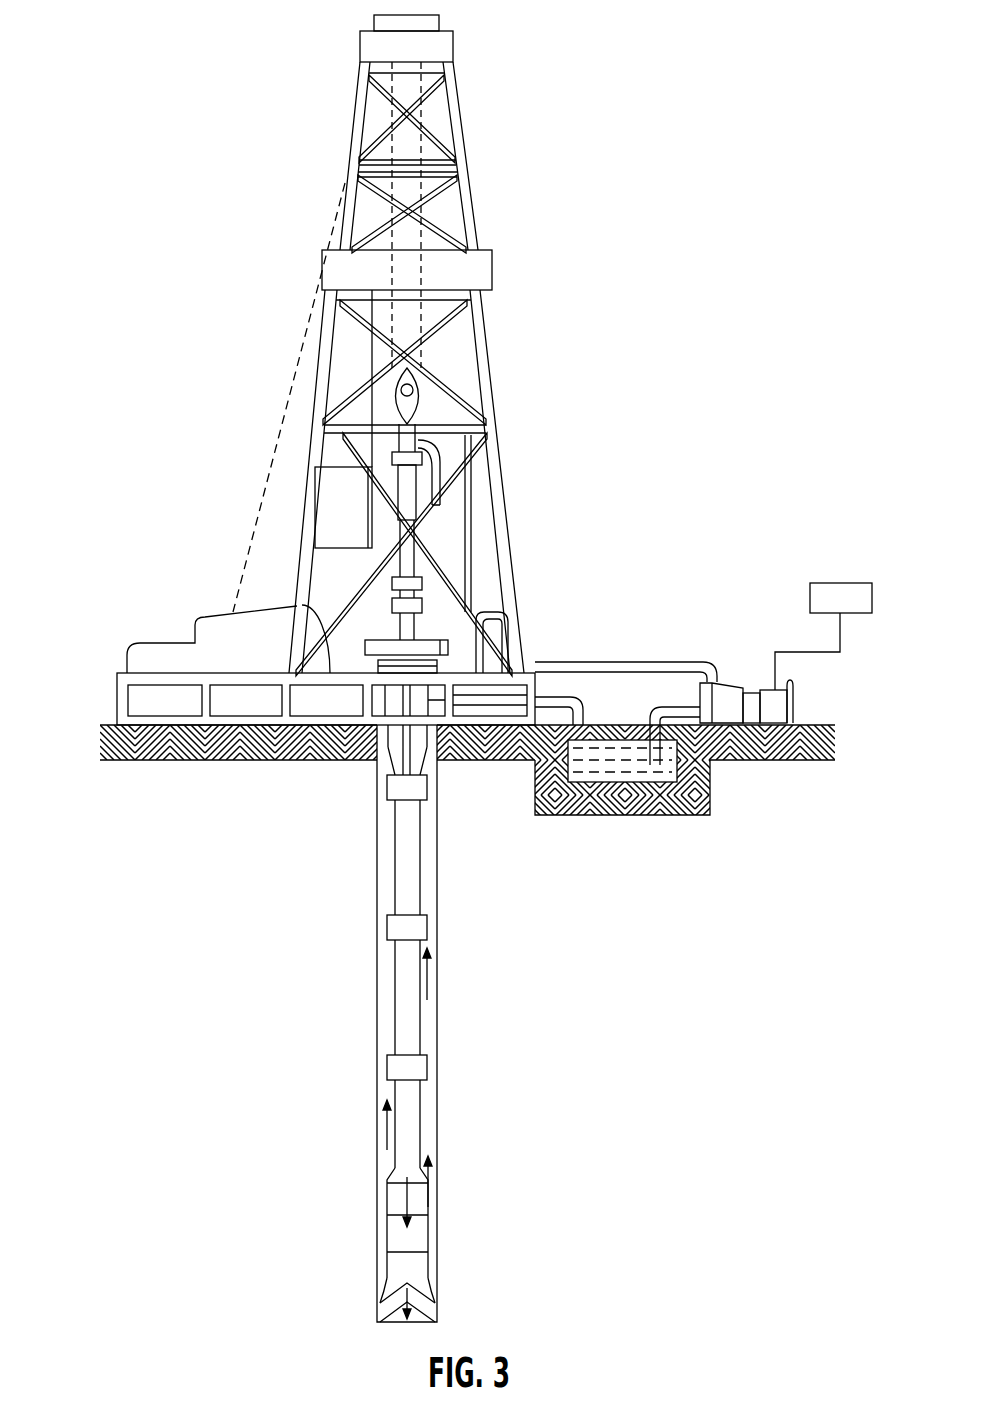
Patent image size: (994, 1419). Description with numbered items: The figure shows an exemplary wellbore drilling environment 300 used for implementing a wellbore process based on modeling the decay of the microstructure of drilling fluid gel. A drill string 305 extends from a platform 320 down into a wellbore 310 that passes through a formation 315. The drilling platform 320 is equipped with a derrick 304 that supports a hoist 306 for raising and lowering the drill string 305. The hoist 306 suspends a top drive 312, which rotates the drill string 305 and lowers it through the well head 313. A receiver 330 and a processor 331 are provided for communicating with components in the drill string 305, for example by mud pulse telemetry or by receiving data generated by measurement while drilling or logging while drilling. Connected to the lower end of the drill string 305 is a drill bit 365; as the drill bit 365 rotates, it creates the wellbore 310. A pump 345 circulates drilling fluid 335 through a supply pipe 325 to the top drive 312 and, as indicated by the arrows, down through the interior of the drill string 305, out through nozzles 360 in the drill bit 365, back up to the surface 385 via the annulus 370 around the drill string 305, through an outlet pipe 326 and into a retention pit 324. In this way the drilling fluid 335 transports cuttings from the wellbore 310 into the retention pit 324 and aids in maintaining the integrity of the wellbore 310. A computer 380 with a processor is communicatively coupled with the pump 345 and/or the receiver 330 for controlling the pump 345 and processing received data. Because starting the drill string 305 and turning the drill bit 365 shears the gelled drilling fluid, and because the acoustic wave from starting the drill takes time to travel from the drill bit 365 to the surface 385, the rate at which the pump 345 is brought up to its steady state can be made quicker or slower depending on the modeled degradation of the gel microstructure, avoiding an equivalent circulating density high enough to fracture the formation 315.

The wellbore drilling environment 300 is at (203, 70).
The derrick 304 is at (462, 193).
The hoist 306 is at (427, 398).
The top drive 312 is at (405, 497).
The processor 331 is at (417, 583).
The receiver 330 is at (410, 602).
The well head 313 is at (432, 640).
The platform 320 is at (117, 690).
The surface 385 is at (117, 725).
The outlet pipe 326 is at (547, 697).
The supply pipe 325 is at (620, 662).
The drilling fluid 335 is at (687, 668).
The pump 345 is at (737, 690).
The computer 380 is at (850, 583).
The retention pit 324 is at (603, 753).
The annulus 370 is at (425, 905).
The wellbore 310 is at (437, 992).
The drill string 305 is at (428, 1066).
The nozzles 360 is at (398, 1278).
The drill bit 365 is at (418, 1278).
The formation 315 is at (673, 1057).